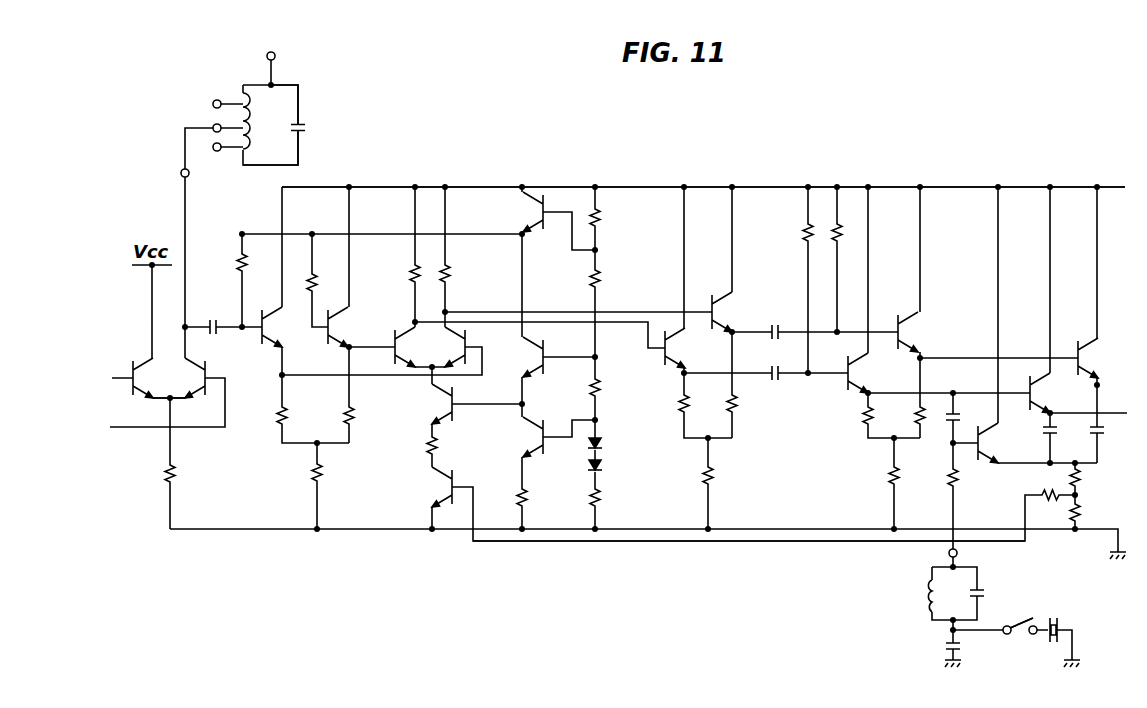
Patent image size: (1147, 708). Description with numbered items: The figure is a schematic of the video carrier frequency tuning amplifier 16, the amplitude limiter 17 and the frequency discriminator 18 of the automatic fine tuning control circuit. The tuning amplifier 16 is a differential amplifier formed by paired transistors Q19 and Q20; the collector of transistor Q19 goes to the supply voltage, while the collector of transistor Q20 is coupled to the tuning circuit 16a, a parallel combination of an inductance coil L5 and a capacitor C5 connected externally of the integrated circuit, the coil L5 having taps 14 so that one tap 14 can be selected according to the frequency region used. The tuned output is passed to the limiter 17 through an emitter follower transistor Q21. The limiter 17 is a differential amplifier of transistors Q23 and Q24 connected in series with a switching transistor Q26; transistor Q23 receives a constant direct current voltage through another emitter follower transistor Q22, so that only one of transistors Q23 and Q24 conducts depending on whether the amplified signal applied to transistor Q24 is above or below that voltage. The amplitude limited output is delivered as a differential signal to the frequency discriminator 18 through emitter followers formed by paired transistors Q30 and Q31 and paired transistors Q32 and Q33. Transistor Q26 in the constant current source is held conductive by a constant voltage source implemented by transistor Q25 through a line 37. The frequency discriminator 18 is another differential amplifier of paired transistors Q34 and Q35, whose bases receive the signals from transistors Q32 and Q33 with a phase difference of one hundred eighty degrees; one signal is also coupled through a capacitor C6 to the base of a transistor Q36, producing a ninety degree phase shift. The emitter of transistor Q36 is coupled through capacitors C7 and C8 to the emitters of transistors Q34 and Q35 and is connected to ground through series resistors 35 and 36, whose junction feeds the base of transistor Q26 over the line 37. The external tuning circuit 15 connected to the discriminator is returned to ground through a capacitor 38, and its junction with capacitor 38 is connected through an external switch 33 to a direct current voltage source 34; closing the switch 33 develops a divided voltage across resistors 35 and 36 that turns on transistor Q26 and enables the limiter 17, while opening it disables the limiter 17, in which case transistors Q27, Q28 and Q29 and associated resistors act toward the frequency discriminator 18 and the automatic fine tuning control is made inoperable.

The tap 14 is at (216, 100).
The tuning circuit 15 is at (938, 612).
The tuning amplifier 16 is at (170, 352).
The tuning circuit 16a is at (298, 103).
The limiter 17 is at (433, 175).
The frequency discriminator 18 is at (1007, 160).
The inductance coil L5 is at (251, 126).
The capacitor C5 is at (302, 130).
The transistor Q19 is at (128, 390).
The transistor Q20 is at (213, 377).
The transistor Q21 is at (262, 350).
The transistor Q22 is at (326, 345).
The transistor Q23 is at (393, 333).
The transistor Q24 is at (467, 347).
The transistor Q25 is at (455, 414).
The transistor Q26 is at (455, 480).
The transistor Q27 is at (540, 228).
The transistor Q28 is at (541, 366).
The transistor Q29 is at (545, 447).
The transistor Q30 is at (668, 360).
The transistor Q31 is at (710, 300).
The transistor Q32 is at (845, 388).
The transistor Q33 is at (895, 320).
The transistor Q34 is at (1028, 405).
The transistor Q35 is at (1076, 348).
The transistor Q36 is at (978, 458).
The capacitor C6 is at (965, 405).
The capacitor C7 is at (1055, 430).
The capacitor C8 is at (1100, 430).
The external switch 33 is at (1020, 617).
The direct current voltage source 34 is at (1055, 625).
The resistor 35 is at (1080, 477).
The resistor 36 is at (1080, 500).
The line 37 is at (682, 543).
The capacitor 38 is at (958, 648).